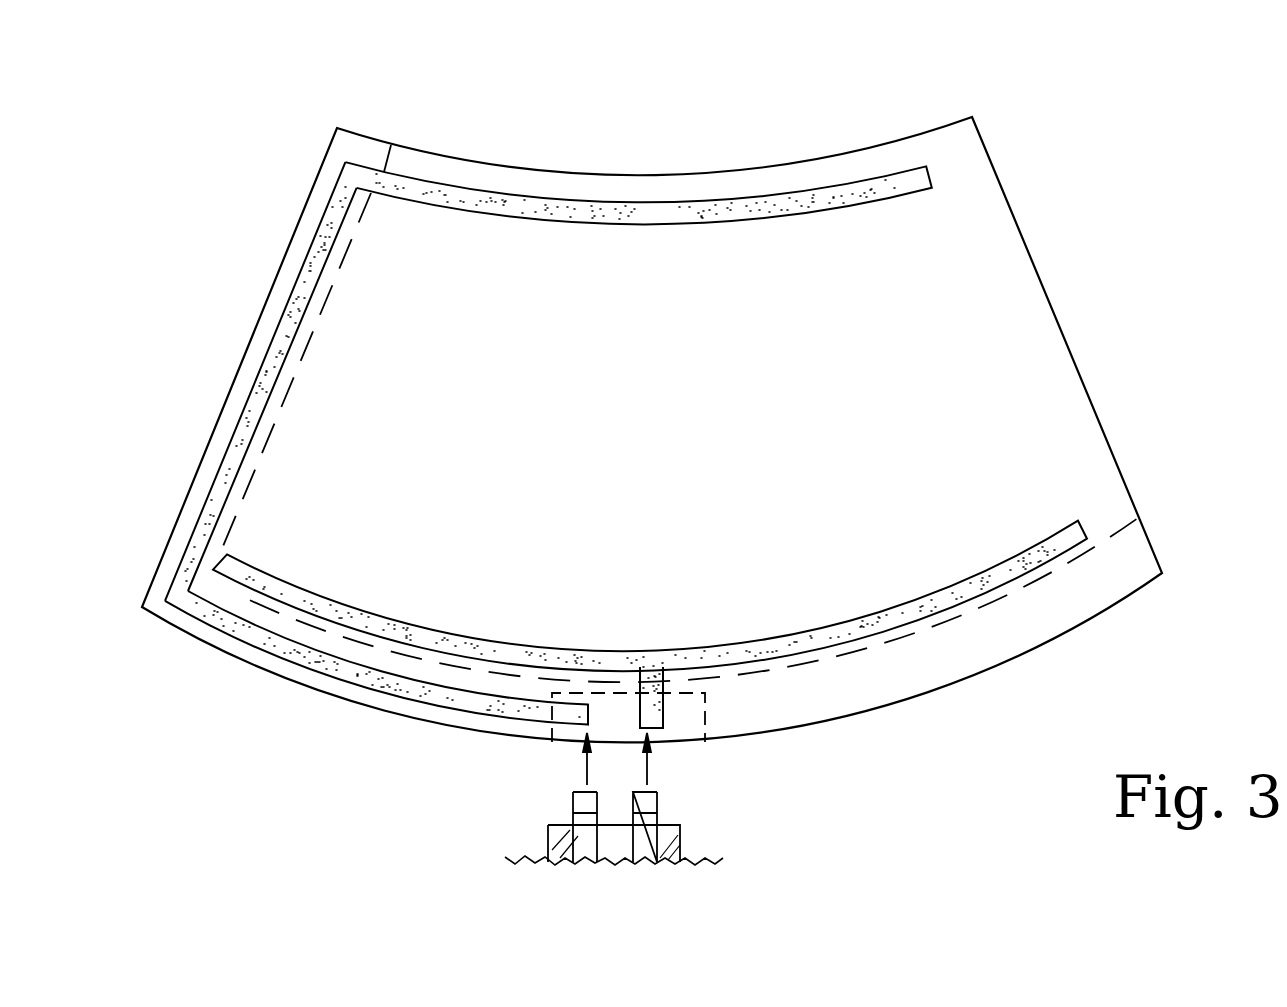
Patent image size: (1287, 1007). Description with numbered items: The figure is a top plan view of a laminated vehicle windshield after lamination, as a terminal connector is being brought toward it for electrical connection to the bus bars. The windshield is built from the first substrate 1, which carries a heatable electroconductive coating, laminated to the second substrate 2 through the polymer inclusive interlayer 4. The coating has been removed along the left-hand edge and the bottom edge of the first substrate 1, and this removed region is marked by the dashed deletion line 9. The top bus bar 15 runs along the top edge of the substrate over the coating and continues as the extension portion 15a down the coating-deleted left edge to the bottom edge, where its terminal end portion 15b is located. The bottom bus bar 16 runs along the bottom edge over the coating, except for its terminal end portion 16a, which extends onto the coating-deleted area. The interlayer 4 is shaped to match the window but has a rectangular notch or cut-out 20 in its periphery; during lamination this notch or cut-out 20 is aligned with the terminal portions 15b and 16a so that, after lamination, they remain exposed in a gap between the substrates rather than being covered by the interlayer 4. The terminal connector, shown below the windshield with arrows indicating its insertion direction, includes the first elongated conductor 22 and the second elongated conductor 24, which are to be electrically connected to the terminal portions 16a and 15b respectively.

The first substrate 1 is at (283, 257).
The second substrate 2 is at (983, 368).
The polymer inclusive interlayer 4 is at (805, 703).
The deletion line 9 is at (295, 378).
The top bus bar 15 is at (760, 208).
The extension portion 15a is at (288, 322).
The terminal end portion 15b is at (570, 723).
The bottom bus bar 16 is at (760, 652).
The terminal end portion 16a is at (662, 720).
The notch or cut-out 20 is at (605, 692).
The first elongated conductor 22 is at (657, 815).
The second elongated conductor 24 is at (573, 808).